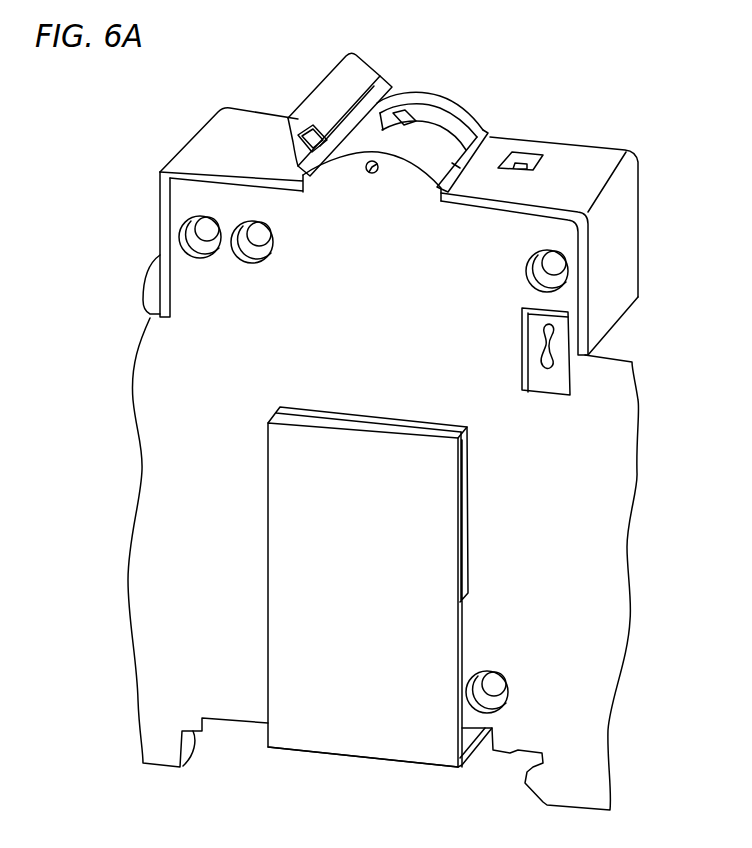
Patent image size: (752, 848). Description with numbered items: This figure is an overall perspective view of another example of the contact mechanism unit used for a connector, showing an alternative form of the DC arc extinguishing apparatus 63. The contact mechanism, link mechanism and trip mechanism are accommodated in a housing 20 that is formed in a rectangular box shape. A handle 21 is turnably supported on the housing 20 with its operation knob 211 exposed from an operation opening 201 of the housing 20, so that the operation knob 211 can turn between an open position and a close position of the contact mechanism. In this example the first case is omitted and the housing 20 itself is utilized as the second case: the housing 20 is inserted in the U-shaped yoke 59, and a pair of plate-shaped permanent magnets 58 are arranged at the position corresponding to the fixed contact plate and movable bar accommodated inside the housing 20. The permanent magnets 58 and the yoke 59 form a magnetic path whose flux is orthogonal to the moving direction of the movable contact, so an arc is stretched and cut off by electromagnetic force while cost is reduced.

The housing 20 is at (600, 158).
The handle 21 is at (447, 142).
The operation opening 201 is at (423, 125).
The operation knob 211 is at (315, 95).
The permanent magnets 58 is at (467, 490).
The yoke 59 is at (295, 563).
The DC arc extinguishing apparatus 63 is at (390, 770).